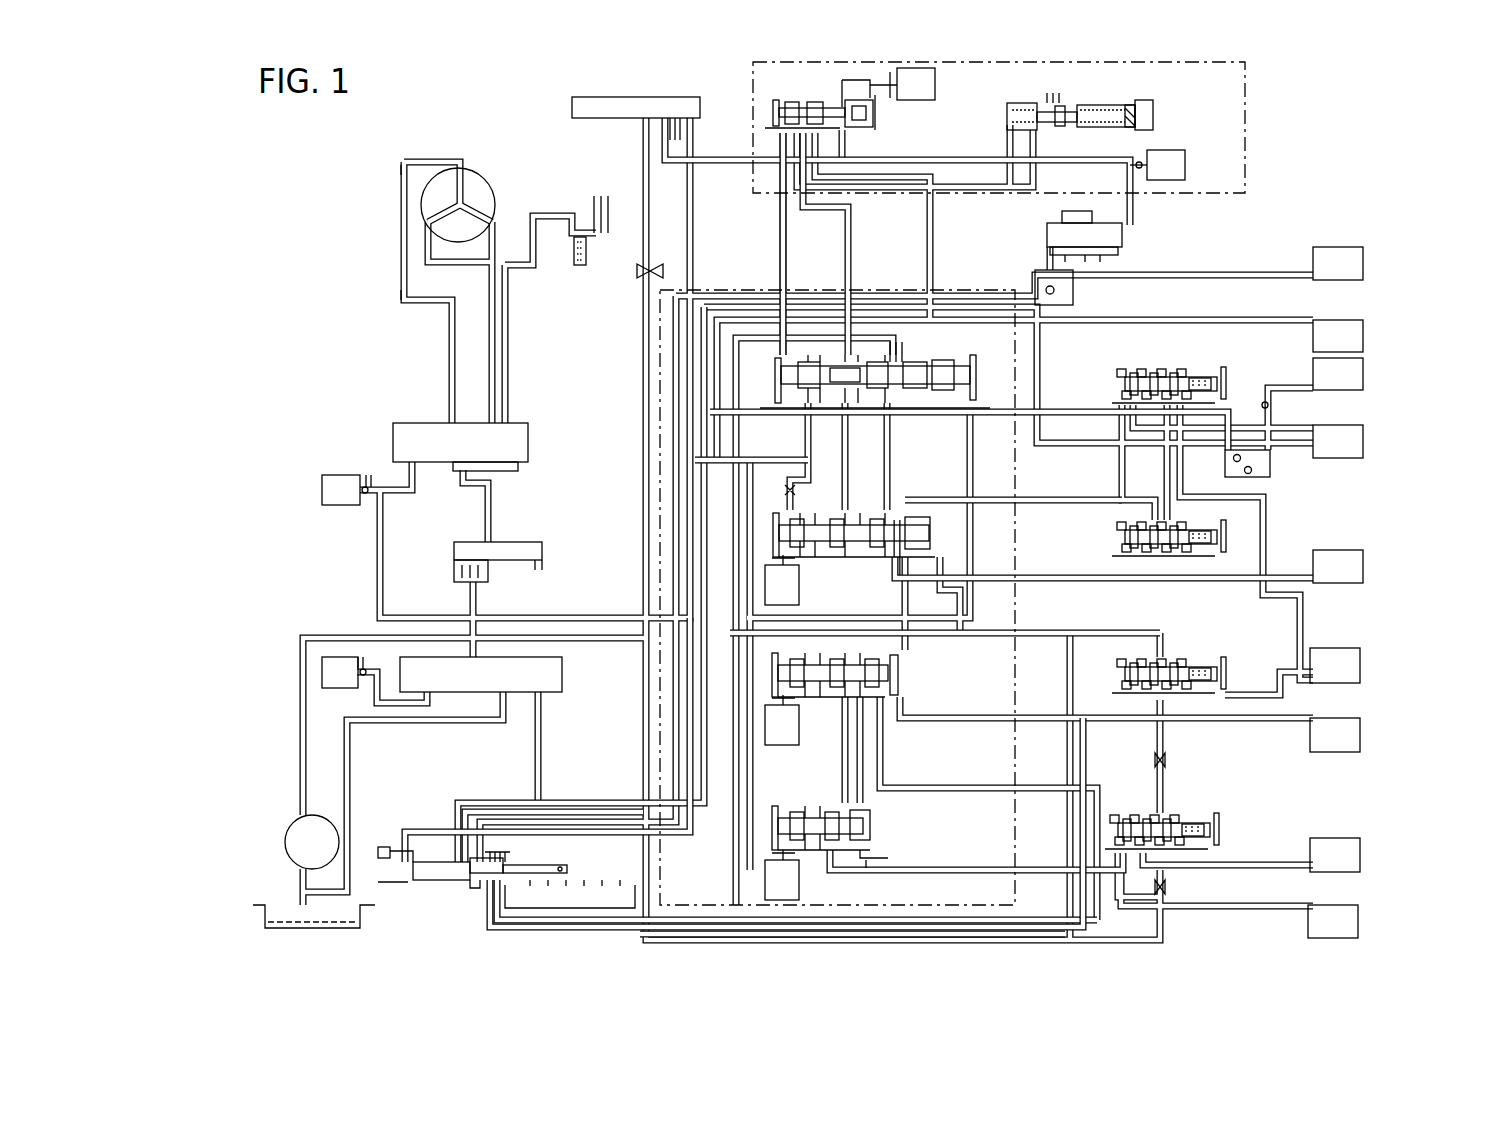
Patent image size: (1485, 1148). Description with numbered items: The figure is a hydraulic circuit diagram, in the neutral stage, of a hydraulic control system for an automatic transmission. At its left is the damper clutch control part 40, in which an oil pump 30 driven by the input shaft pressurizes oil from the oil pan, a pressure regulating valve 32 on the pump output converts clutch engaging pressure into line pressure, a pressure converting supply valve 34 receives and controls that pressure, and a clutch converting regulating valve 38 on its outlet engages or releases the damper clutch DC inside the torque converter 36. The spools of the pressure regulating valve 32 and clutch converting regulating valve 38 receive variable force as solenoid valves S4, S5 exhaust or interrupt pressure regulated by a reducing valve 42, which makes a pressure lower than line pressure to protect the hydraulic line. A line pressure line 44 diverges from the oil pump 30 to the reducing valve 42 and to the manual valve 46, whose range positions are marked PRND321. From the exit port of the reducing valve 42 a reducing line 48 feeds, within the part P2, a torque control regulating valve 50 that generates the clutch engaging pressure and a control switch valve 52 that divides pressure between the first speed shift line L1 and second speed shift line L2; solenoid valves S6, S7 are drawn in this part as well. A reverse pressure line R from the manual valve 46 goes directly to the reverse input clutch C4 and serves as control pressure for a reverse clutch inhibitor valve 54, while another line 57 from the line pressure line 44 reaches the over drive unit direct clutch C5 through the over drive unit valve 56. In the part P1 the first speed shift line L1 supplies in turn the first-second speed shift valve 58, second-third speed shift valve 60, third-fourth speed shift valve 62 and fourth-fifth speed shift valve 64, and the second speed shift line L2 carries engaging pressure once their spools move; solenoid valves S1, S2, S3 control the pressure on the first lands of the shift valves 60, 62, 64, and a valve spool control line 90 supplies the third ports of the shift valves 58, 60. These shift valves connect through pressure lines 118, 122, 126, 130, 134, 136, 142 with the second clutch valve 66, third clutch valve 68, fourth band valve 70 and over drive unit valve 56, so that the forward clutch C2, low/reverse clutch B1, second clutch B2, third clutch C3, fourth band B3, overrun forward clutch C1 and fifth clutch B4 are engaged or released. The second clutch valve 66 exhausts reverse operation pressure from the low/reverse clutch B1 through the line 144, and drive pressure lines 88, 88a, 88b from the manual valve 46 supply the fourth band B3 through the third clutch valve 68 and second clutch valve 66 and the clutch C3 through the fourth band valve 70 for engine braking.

The oil pump 30 is at (283, 843).
The pressure regulating valve 32 is at (560, 705).
The pressure converting supply valve 34 is at (555, 550).
The torque converter 36 is at (500, 183).
The clutch converting regulating valve 38 is at (545, 437).
The damper clutch control part 40 is at (352, 378).
The reducing valve 42 is at (565, 106).
The line pressure line 44 is at (601, 643).
The manual valve 46 is at (440, 886).
The reducing line 48 is at (728, 165).
The torque control regulating valve 50 is at (1165, 116).
The control switch valve 52 is at (882, 112).
The reverse clutch inhibitor valve 54 is at (1135, 238).
The over drive unit valve 56 is at (1232, 840).
The line 57 is at (913, 932).
The first-second speed shift valve 58 is at (950, 362).
The second-third speed shift valve 60 is at (950, 538).
The third-fourth speed shift valve 62 is at (912, 680).
The fourth-fifth speed shift valve 64 is at (887, 832).
The second clutch valve 66 is at (1112, 382).
The third clutch valve 68 is at (1236, 546).
The fourth band valve 70 is at (1200, 657).
The drive range passage 88 is at (710, 804).
The drive pressure line 88a is at (681, 917).
The drive pressure line 88b is at (830, 924).
The valve spool control line 90 is at (764, 462).
The oil passage 118 is at (1003, 415).
The oil passage 122 is at (1063, 503).
The oil passage 126 is at (1052, 581).
The oil passage 130 is at (990, 636).
The oil passage 134 is at (962, 721).
The oil passage 136 is at (900, 786).
The oil passage 142 is at (980, 868).
The line 144 is at (1241, 440).
The reverse pressure line R is at (682, 833).
The damper clutch DC is at (400, 168).
The first speed shift line L1 is at (780, 252).
The second speed shift line L2 is at (845, 252).
The part P1 is at (987, 288).
The part P2 is at (1262, 104).
The solenoid valve S1 is at (782, 585).
The solenoid valve S2 is at (782, 725).
The solenoid valve S3 is at (782, 880).
The solenoid valve S4 is at (346, 490).
The solenoid valve S5 is at (344, 672).
The solenoid valve S6 is at (916, 84).
The solenoid valve S7 is at (1157, 165).
The overrun forward clutch C1 is at (1360, 735).
The forward clutch C2 is at (1363, 337).
The third clutch C3 is at (1363, 567).
The reverse input clutch C4 is at (1363, 265).
The over drive unit direct clutch C5 is at (1360, 855).
The low/reverse clutch B1 is at (1363, 375).
The second clutch B2 is at (1363, 442).
The fourth band B3 is at (1360, 666).
The fifth clutch B4 is at (1358, 921).
The manual valve shift positions PRND321 is at (573, 897).